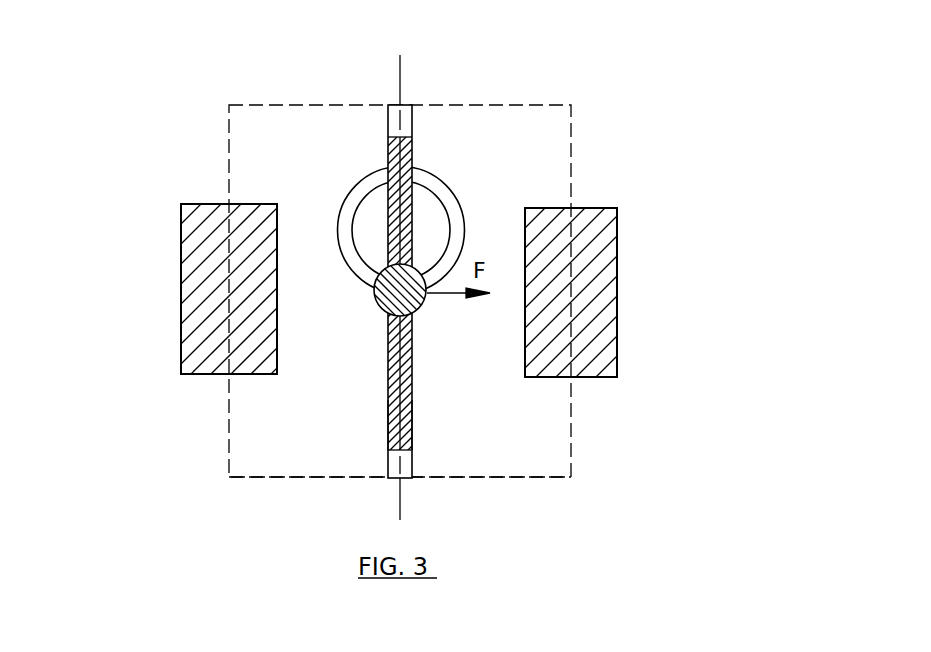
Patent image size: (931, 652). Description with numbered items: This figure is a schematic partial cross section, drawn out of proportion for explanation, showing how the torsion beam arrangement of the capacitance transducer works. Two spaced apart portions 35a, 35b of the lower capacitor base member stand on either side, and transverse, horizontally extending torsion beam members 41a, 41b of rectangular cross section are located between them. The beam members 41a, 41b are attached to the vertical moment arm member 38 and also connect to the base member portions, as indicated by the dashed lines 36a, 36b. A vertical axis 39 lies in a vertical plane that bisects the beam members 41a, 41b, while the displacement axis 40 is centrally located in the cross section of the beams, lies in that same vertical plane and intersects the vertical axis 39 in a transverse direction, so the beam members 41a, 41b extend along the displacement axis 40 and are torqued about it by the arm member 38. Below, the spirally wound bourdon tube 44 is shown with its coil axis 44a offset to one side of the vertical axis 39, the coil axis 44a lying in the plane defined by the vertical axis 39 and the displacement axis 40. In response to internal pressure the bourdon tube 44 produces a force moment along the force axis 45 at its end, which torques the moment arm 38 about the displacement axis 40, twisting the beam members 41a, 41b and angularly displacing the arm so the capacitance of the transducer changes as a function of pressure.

The spaced apart portion of lower capacitor base member 35a is at (192, 290).
The spaced apart portion of lower capacitor base member 35b is at (602, 293).
The dashed line 36a is at (492, 105).
The dashed line 36b is at (523, 477).
The vertical moment arm member 38 is at (378, 309).
The vertical axis 39 is at (403, 303).
The displacement axis 40 is at (401, 75).
The torsion beam member 41a is at (388, 154).
The torsion beam member 41b is at (411, 437).
The bourdon tube 44 is at (445, 187).
The coil axis 44a is at (400, 232).
The force axis 45 is at (432, 298).